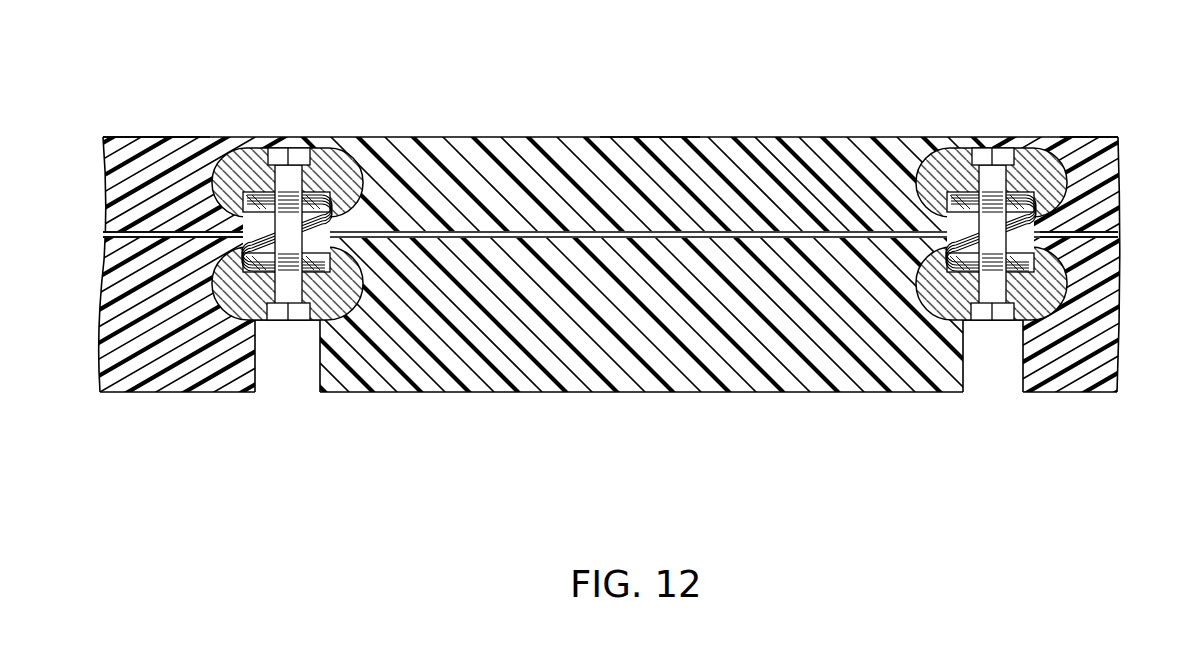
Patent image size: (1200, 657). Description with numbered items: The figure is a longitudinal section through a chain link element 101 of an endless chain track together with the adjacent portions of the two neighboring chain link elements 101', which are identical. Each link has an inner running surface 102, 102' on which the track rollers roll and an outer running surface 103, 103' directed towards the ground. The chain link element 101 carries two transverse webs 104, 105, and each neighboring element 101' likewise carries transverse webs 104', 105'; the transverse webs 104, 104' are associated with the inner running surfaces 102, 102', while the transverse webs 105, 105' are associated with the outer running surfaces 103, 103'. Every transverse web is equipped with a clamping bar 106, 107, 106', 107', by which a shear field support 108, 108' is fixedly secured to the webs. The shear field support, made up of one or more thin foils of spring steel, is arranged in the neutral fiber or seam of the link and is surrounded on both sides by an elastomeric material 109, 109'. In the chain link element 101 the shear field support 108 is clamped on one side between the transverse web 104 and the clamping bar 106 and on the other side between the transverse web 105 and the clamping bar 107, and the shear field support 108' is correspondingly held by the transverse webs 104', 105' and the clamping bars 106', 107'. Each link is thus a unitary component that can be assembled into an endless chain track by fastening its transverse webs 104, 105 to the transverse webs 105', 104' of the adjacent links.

The chain link element 101 is at (650, 80).
The adjacent chain link element 101' is at (635, 78).
The inner running surface 102 is at (610, 95).
The inner running surface 102' is at (603, 94).
The outer running surface 103 is at (641, 427).
The outer running surface 103' is at (608, 427).
The transverse web 104 is at (974, 191).
The transverse web 104' is at (270, 191).
The transverse web 105 is at (287, 313).
The transverse web 105' is at (991, 312).
The clamping bar 106 is at (1014, 182).
The clamping bar 106' is at (319, 182).
The clamping bar 107 is at (229, 252).
The clamping bar 107' is at (940, 253).
The shear field support 108 is at (610, 197).
The shear field support 108' is at (608, 216).
The elastomeric material 109 is at (681, 263).
The elastomeric material 109' is at (600, 380).